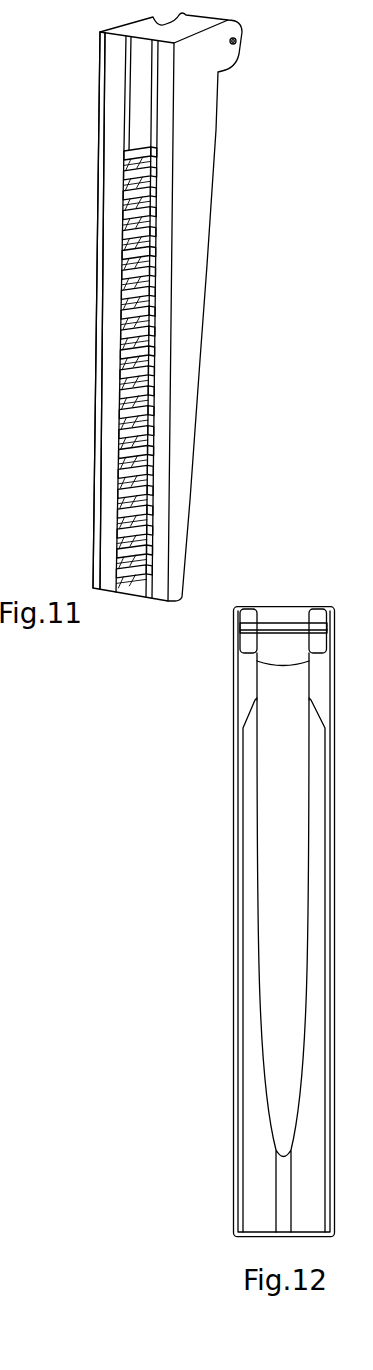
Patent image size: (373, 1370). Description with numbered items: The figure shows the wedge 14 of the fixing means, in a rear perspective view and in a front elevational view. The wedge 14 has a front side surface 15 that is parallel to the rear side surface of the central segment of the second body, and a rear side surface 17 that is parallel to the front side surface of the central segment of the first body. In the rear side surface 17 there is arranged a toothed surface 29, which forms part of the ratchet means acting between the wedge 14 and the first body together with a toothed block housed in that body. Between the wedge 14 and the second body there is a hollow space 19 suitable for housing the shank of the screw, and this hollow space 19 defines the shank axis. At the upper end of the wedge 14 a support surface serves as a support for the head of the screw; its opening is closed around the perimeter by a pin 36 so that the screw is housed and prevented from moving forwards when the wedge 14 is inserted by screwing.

In FIG. 11, the wedge 14 is at (197, 152).
In FIG. 12, the wedge 14 is at (234, 768).
In FIG. 11, the rear side surface 17 is at (110, 393).
In FIG. 11, the toothed surface 29 is at (146, 301).
In FIG. 12, the pin 36 is at (283, 628).
In FIG. 12, the hollow space 19 is at (283, 892).
In FIG. 12, the front side surface 15 is at (255, 1118).